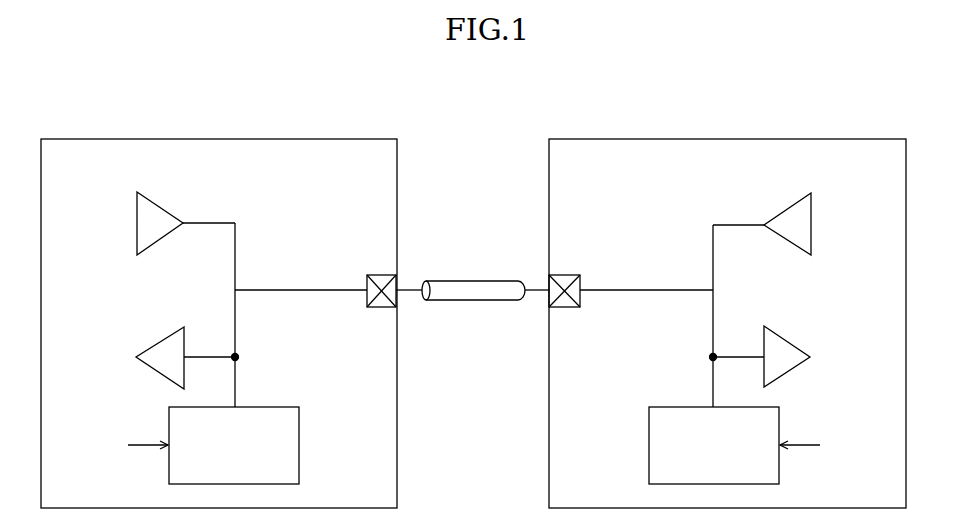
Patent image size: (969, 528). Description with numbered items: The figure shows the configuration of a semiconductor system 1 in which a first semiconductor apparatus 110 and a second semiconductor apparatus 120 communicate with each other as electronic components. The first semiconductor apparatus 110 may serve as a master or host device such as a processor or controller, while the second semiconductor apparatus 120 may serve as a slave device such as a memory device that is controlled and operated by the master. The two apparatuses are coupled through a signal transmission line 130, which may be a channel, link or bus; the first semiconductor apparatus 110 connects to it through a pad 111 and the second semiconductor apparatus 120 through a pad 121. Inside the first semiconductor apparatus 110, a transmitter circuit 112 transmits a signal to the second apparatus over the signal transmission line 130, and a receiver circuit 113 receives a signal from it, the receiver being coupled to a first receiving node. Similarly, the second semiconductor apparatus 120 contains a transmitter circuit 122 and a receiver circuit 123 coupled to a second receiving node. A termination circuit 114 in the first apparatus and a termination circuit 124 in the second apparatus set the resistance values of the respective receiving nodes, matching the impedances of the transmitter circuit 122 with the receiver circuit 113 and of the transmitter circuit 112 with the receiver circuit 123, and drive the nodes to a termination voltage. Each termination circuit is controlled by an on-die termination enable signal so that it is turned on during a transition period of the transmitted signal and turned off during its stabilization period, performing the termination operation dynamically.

The semiconductor system 1 is at (40, 89).
The first semiconductor apparatus 110 is at (350, 139).
The pad 111 is at (375, 275).
The transmitter circuit 112 is at (187, 209).
The receiver circuit 113 is at (200, 329).
The termination circuit 114 is at (300, 446).
The second semiconductor apparatus 120 is at (852, 139).
The pad 121 is at (567, 275).
The transmitter circuit 122 is at (812, 209).
The receiver circuit 123 is at (783, 339).
The termination circuit 124 is at (648, 446).
The signal transmission line 130 is at (477, 281).